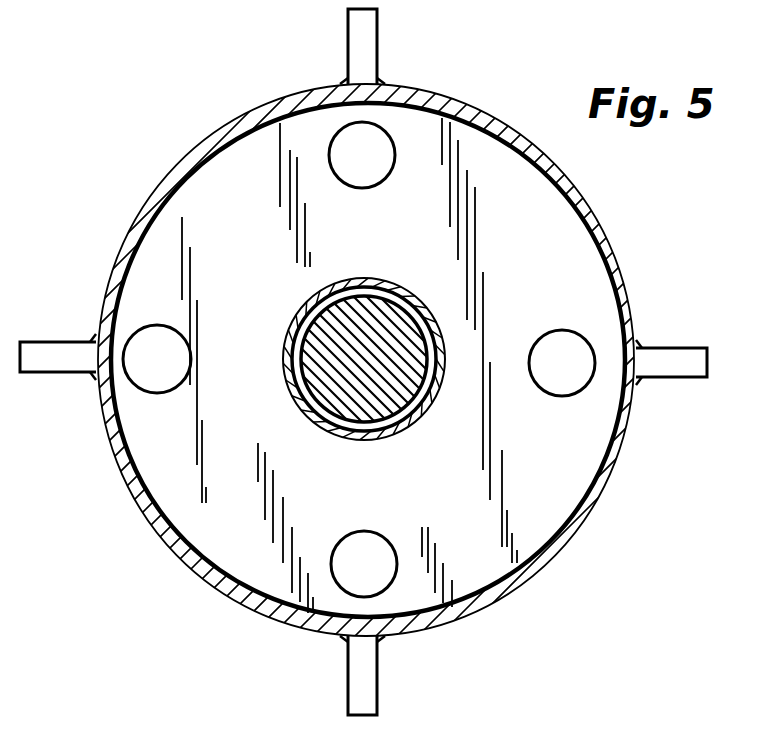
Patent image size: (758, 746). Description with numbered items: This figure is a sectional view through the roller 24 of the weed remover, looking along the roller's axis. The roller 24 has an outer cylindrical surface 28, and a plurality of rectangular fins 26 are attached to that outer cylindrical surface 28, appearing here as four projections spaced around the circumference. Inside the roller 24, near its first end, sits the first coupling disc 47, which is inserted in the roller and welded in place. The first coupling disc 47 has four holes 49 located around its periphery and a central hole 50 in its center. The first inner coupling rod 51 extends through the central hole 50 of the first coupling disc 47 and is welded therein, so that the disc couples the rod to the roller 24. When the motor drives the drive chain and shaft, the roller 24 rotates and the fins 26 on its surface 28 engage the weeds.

The roller 24 is at (146, 160).
The rectangular fins 26 is at (670, 362).
The outer cylindrical surface 28 is at (602, 502).
The first coupling disc 47 is at (465, 563).
The holes 49 is at (570, 368).
The central hole 50 is at (430, 418).
The first inner coupling rod 51 is at (392, 355).